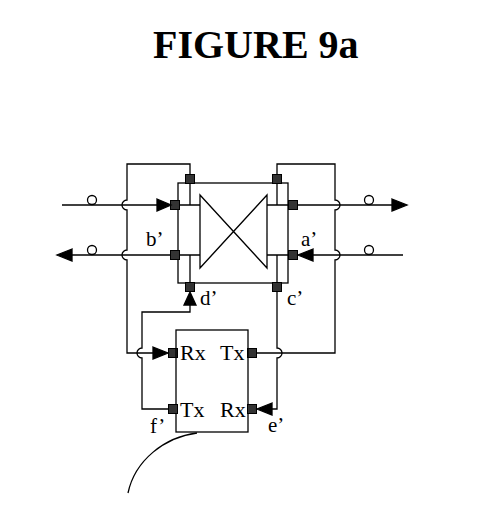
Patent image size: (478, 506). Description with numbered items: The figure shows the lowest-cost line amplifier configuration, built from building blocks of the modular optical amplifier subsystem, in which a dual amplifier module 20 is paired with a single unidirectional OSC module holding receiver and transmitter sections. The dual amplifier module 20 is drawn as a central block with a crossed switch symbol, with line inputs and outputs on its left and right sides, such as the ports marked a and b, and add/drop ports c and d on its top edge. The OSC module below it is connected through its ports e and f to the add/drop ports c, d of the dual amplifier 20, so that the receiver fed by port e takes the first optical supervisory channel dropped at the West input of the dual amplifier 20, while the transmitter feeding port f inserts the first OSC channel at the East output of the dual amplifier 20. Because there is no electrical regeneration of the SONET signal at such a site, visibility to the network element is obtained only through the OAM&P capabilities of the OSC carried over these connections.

The dual amplifier module 20 is at (223, 183).
The port a is at (121, 190).
The port b is at (348, 194).
The add/drop port c is at (161, 250).
The add/drop port d is at (297, 254).
The port e is at (165, 366).
The port f is at (256, 342).